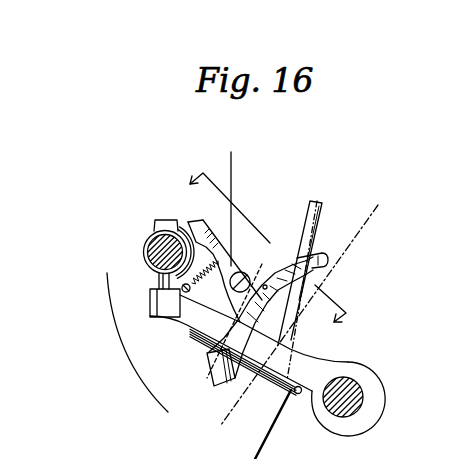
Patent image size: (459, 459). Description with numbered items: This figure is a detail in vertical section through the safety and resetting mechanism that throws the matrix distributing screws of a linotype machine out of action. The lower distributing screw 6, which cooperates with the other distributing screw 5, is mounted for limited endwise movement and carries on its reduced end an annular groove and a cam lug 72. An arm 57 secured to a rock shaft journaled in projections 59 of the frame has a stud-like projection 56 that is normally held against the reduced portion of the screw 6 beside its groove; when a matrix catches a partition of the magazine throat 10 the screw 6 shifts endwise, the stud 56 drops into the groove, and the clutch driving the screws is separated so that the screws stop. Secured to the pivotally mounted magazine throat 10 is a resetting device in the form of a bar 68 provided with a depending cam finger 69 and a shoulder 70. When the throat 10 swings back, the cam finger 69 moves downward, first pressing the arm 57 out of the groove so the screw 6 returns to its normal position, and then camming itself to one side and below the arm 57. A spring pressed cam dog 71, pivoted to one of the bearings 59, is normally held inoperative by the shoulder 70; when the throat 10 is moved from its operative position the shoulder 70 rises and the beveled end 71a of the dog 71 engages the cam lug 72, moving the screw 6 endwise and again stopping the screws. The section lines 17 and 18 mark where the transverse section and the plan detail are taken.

The distributing screw 5 is at (143, 234).
The lower distributing screw 6 is at (143, 253).
The magazine throat 10 is at (188, 364).
The section line x17 17 is at (301, 315).
The section line x18 18 is at (288, 241).
The stud-like projection 56 is at (156, 289).
The arm 57 is at (308, 403).
The projections 59 is at (350, 362).
The resetting bar 68 is at (313, 258).
The cam finger 69 is at (209, 371).
The shoulder 70 is at (264, 285).
The cam dog 71 is at (237, 251).
The beveled end 71a is at (197, 221).
The cam lug 72 is at (165, 219).